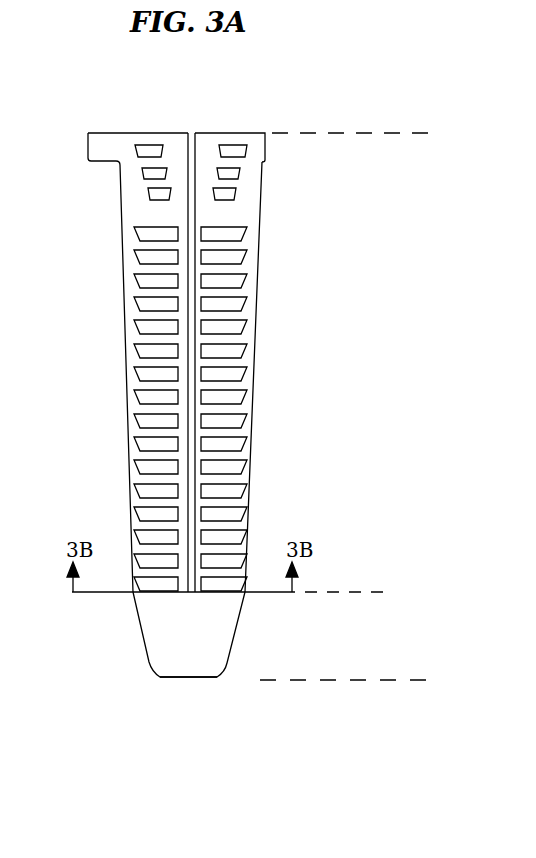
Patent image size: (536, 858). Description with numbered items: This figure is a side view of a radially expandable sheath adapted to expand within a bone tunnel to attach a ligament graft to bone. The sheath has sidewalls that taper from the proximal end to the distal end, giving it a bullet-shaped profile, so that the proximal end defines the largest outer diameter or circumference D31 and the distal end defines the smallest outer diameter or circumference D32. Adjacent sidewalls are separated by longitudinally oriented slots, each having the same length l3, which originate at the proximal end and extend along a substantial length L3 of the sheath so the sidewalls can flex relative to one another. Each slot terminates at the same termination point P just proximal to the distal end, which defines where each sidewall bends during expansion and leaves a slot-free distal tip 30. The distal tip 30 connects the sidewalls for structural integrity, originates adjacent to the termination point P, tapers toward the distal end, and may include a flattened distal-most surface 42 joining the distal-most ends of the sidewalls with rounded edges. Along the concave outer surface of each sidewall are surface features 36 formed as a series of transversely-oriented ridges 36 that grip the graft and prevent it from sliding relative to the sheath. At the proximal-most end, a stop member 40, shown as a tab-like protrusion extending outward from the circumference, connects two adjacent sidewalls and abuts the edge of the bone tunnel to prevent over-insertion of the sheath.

The stop member 40 is at (100, 148).
The surface features 36 is at (150, 418).
The distal tip 30 is at (143, 673).
The flattened distal-most surface 42 is at (200, 690).
The termination point P is at (193, 594).
The largest outer diameter D31 is at (262, 130).
The smallest outer diameter D32 is at (211, 716).
The slot length l3 is at (366, 577).
The substantial length of the sheath L3 is at (424, 659).